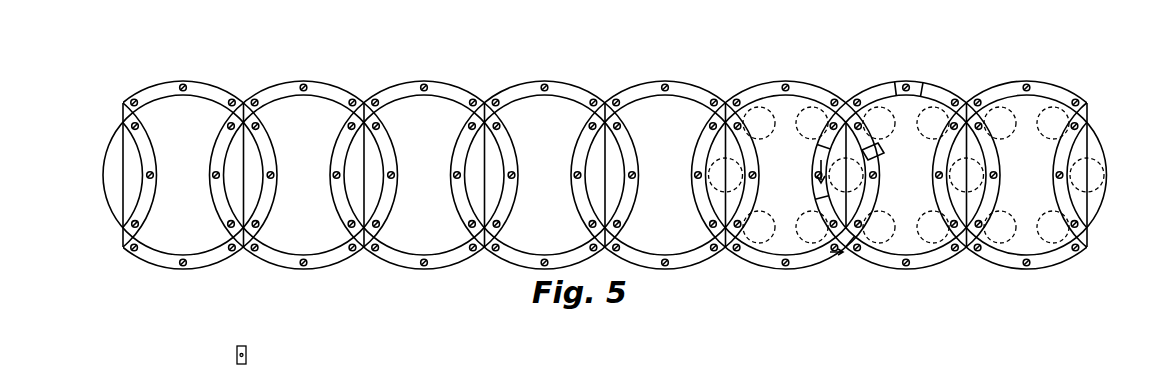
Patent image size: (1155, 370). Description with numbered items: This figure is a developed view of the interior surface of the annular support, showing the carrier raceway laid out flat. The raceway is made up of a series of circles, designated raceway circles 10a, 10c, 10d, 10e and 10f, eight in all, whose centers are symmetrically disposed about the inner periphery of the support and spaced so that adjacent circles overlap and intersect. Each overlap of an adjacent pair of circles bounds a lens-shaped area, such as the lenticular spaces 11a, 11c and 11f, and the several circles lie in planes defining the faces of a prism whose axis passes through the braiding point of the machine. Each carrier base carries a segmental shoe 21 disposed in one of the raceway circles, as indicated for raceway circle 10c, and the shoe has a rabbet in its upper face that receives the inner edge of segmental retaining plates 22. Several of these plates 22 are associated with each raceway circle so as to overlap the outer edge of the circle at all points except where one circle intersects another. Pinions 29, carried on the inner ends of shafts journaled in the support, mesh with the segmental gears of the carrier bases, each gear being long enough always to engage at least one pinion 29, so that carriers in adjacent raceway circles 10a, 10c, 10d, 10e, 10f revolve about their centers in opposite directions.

The raceway circle 10e is at (581, 74).
The raceway circle 10d is at (709, 74).
The raceway circle 10c is at (792, 97).
The raceway circle 10f is at (913, 97).
The raceway circle 10a is at (1036, 97).
The lenticular space 11c is at (724, 149).
The lenticular space 11a is at (976, 148).
The lenticular space 11f is at (882, 153).
The segmental shoe 21 is at (827, 152).
The segmental retaining plate 22 is at (921, 262).
The pinion 29 is at (770, 222).